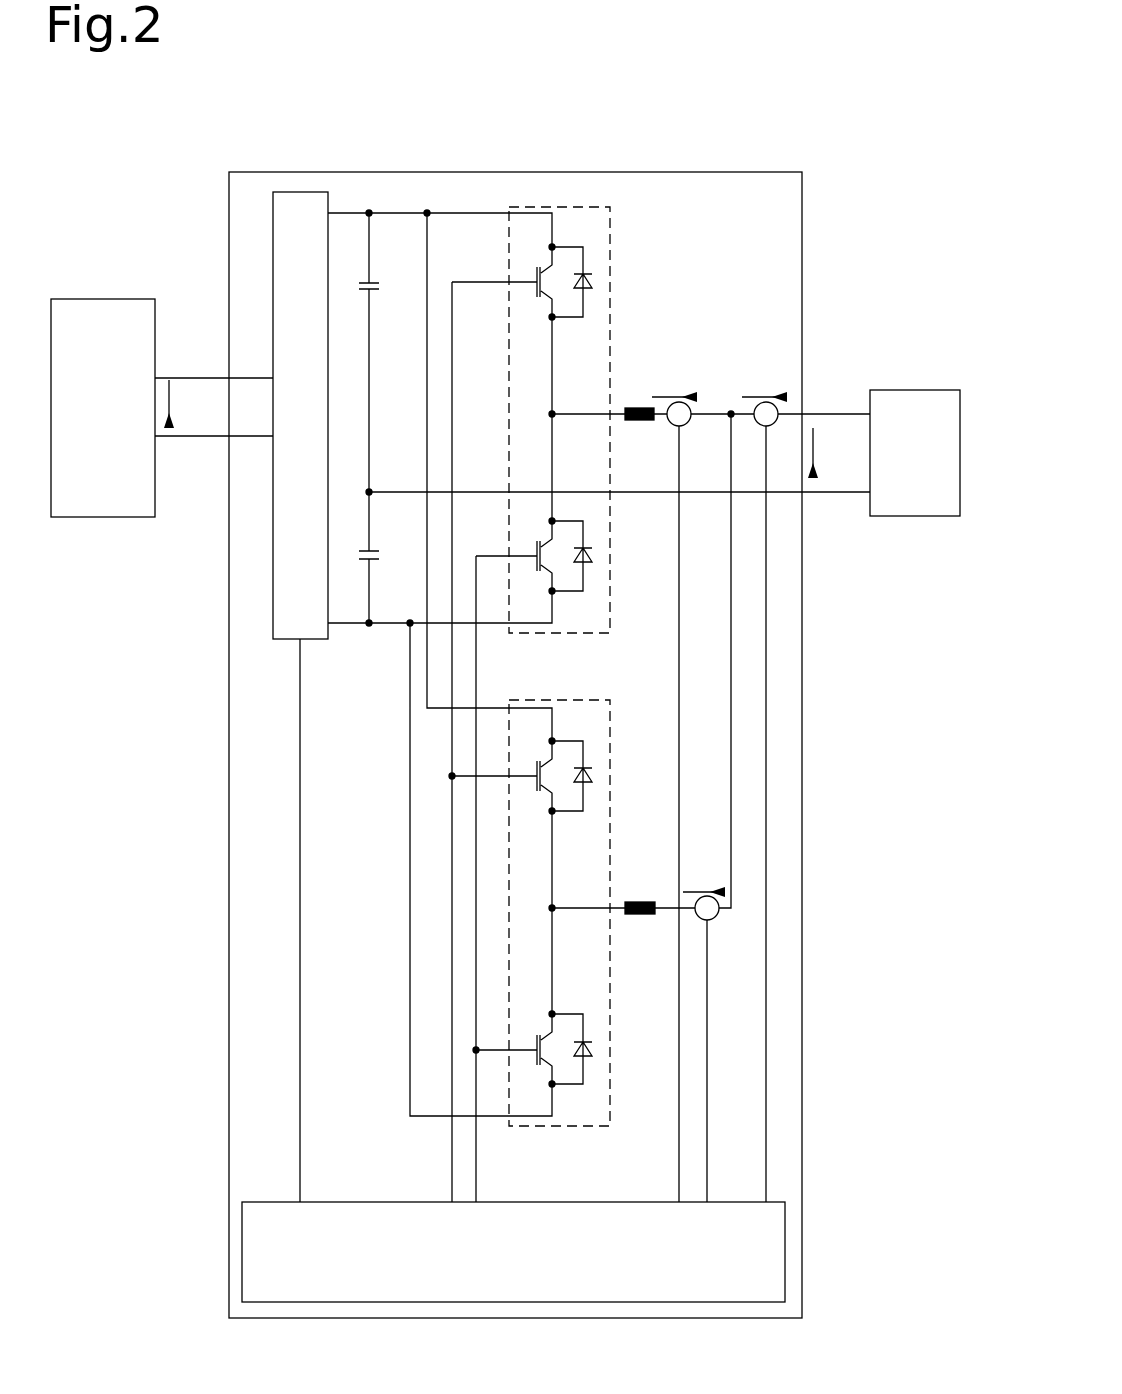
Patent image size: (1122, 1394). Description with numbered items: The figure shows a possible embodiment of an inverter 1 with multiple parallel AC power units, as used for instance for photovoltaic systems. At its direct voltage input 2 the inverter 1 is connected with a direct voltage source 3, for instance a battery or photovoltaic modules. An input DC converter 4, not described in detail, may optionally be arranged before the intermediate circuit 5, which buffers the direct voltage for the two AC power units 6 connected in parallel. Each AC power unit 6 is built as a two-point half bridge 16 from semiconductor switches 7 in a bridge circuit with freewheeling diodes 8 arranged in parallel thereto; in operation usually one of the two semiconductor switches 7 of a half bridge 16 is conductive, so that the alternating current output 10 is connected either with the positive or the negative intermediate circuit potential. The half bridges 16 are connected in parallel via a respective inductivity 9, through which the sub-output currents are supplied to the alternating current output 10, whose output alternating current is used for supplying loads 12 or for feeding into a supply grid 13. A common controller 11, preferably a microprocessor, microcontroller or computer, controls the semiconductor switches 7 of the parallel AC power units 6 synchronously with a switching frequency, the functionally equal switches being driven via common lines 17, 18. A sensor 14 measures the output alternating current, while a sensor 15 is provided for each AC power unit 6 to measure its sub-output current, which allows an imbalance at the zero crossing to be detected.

The inverter 1 is at (228, 978).
The direct voltage input 2 is at (221, 440).
The direct voltage source 3 is at (103, 517).
The input DC converter 4 is at (328, 639).
The intermediate circuit 5 is at (378, 358).
The AC power unit 6 is at (527, 207).
The semiconductor switch 7 is at (535, 280).
The freewheeling diode 8 is at (590, 280).
The inductivity 9 is at (638, 424).
The alternating current output 10 is at (810, 503).
The controller 11 is at (383, 1200).
The load 12 is at (915, 514).
The supply grid 13 is at (915, 516).
The sensor 14 is at (777, 407).
The sensor 15 is at (685, 426).
The 2-point half bridge 16 is at (573, 375).
The common line 17 is at (452, 866).
The common line 18 is at (477, 947).